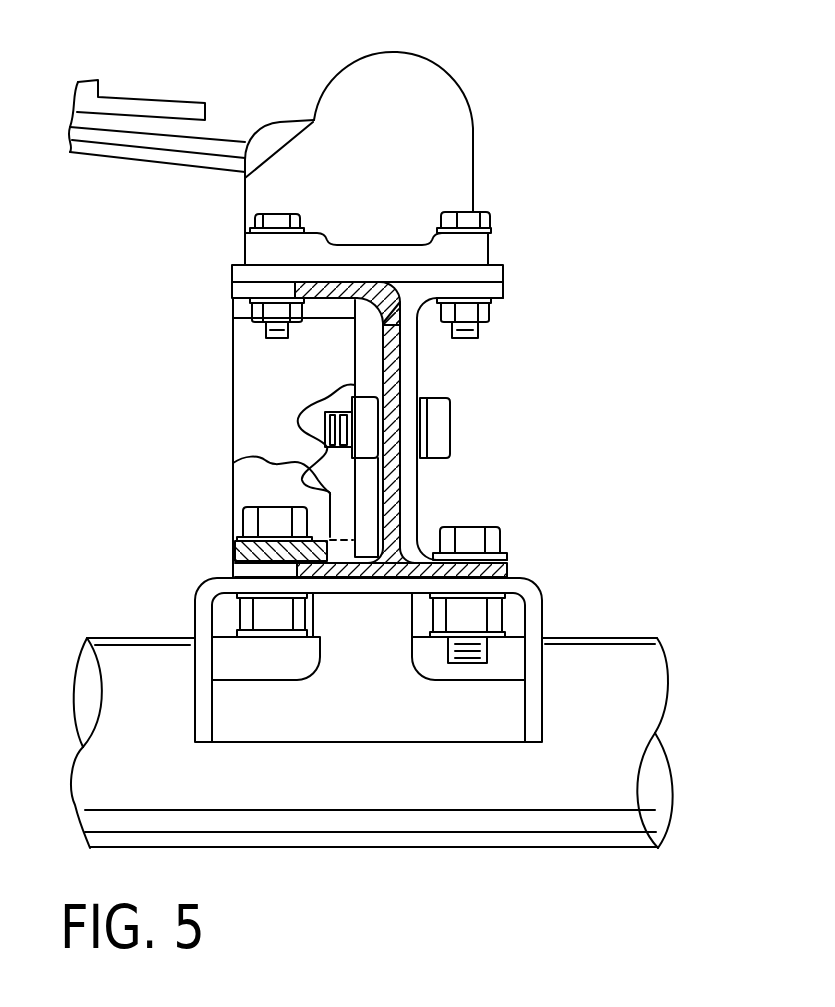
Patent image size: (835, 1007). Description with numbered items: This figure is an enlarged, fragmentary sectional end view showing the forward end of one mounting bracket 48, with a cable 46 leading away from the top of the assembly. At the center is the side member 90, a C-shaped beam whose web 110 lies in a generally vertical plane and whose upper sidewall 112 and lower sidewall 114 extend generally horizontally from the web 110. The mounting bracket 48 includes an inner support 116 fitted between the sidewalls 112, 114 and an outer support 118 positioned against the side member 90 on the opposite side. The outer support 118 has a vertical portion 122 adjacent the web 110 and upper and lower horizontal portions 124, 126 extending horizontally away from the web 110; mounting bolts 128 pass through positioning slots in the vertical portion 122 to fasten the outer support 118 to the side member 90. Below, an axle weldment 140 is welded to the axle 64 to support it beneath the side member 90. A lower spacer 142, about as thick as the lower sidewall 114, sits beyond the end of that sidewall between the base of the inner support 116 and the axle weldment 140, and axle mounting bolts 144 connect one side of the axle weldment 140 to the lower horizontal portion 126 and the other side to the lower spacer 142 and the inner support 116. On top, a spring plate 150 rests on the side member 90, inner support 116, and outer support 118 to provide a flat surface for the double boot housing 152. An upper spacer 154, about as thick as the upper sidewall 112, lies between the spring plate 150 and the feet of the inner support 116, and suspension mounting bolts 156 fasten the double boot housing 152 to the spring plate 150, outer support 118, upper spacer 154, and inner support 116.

The cable 46 is at (150, 69).
The mounting bracket 48 is at (637, 242).
The axle 64 is at (582, 837).
The side member 90 is at (395, 372).
The web 110 is at (393, 495).
The upper sidewall 112 is at (305, 300).
The lower sidewall 114 is at (340, 568).
The inner support 116 is at (252, 383).
The outer support 118 is at (409, 350).
The vertical portion 122 is at (410, 515).
The upper horizontal portion 124 is at (493, 288).
The lower horizontal portion 126 is at (500, 567).
The mounting bolts 128 is at (437, 423).
The axle weldment 140 is at (447, 703).
The lower spacer 142 is at (225, 573).
The axle mounting bolts 144 is at (262, 520).
The spring plate 150 is at (493, 270).
The double boot housing 152 is at (462, 138).
The upper spacer 154 is at (240, 290).
The suspension mounting bolts 156 is at (268, 223).